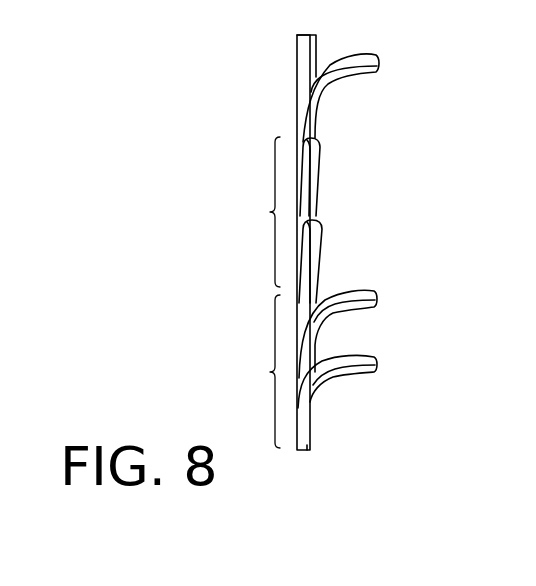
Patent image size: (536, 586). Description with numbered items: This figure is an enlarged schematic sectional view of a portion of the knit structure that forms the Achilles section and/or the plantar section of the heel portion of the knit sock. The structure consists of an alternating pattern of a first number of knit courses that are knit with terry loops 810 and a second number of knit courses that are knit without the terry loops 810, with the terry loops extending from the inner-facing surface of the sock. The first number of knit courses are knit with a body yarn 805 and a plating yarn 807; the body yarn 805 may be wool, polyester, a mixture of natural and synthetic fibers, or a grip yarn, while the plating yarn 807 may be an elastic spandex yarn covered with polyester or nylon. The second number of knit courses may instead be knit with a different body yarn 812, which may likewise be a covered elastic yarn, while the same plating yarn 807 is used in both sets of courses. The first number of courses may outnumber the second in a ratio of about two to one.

The body yarn 805 is at (308, 452).
The plating yarn 807 is at (320, 157).
The terry loops 810 is at (372, 297).
The body yarn 812 is at (301, 143).